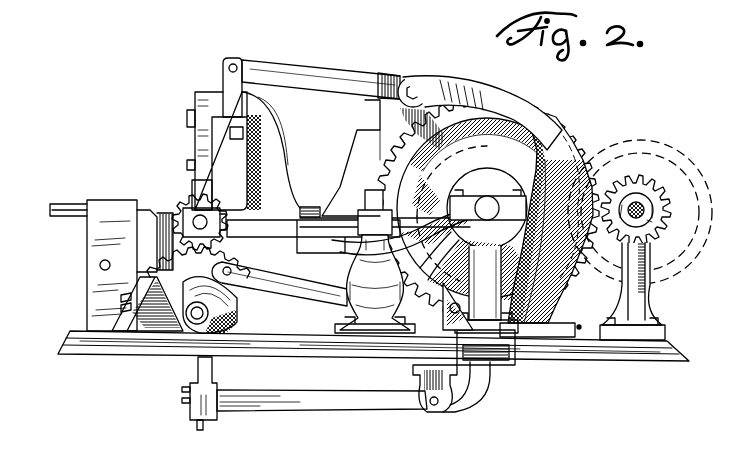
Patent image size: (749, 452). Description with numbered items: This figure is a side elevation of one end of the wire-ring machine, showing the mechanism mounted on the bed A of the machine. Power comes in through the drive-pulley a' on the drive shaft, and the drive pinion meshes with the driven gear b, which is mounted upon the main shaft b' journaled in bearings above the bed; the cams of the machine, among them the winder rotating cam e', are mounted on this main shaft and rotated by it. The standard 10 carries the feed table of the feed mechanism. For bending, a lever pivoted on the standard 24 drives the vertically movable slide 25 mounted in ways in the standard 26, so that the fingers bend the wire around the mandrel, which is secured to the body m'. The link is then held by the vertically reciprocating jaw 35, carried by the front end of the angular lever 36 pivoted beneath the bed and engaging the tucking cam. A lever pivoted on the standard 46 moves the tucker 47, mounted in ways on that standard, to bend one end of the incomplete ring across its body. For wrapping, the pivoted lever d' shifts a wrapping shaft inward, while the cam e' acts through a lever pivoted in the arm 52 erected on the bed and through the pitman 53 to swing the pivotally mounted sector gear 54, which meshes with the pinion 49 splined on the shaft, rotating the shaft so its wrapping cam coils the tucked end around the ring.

The bed A is at (373, 346).
The tucker 47 is at (50, 210).
The standard 46 is at (119, 265).
The pinion 49 is at (188, 196).
The sector gear 54 is at (198, 290).
The pitman 53 is at (279, 284).
The pivoted lever d' is at (348, 235).
The vertically reciprocating jaw 35 is at (193, 393).
The angular lever 36 is at (353, 387).
The vertically movable slide 25 is at (223, 86).
The standard 24 is at (321, 79).
The standard 26 is at (271, 150).
The body m' is at (340, 158).
The driven gear b is at (487, 204).
The main shaft b' is at (488, 205).
The winder rotating cam e' is at (453, 210).
The arm 52 is at (480, 109).
The drive-pulley a' is at (640, 212).
The standard 10 is at (636, 291).